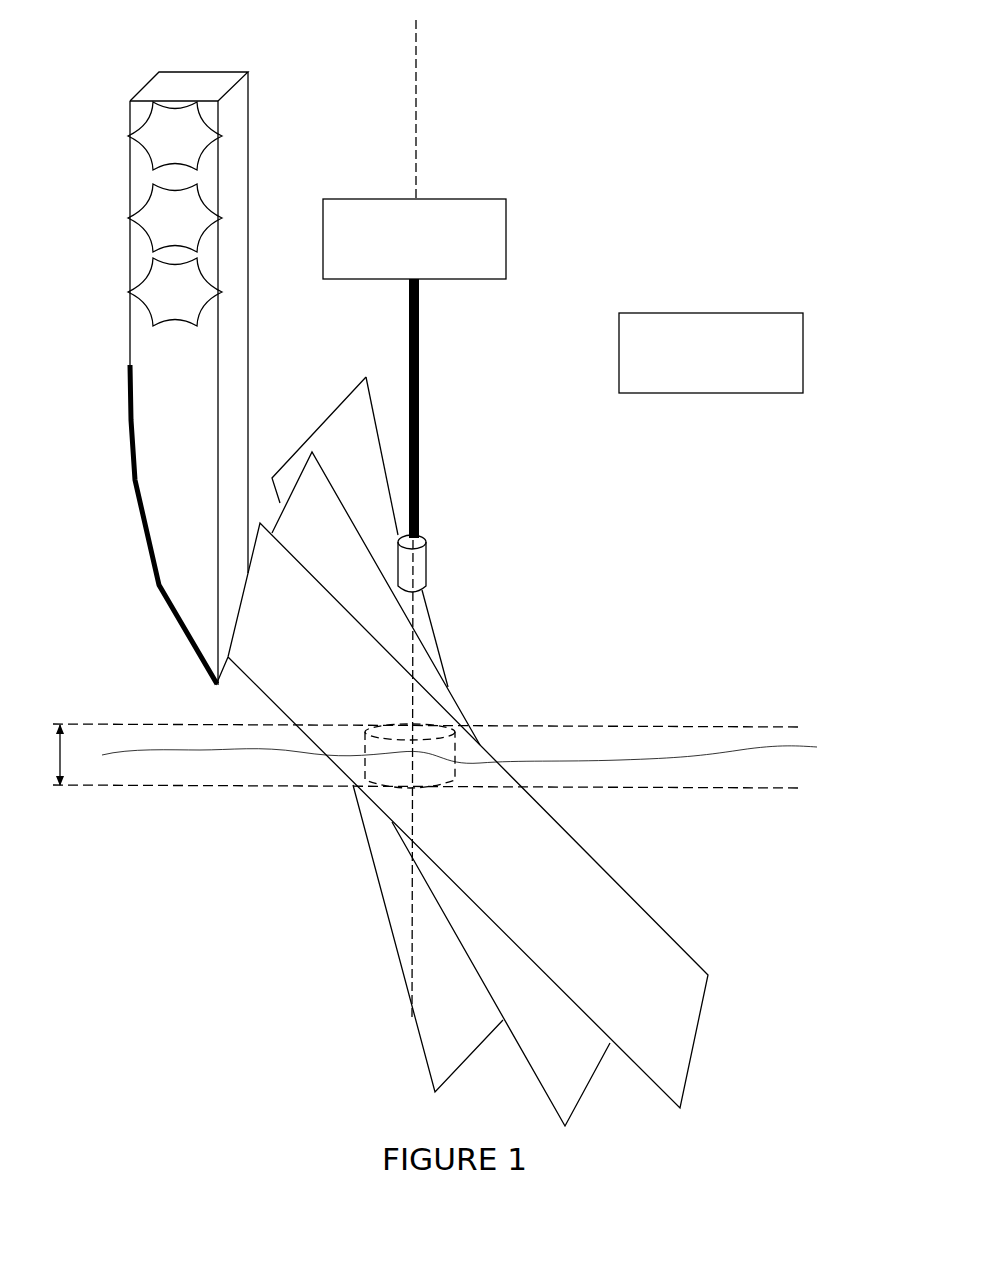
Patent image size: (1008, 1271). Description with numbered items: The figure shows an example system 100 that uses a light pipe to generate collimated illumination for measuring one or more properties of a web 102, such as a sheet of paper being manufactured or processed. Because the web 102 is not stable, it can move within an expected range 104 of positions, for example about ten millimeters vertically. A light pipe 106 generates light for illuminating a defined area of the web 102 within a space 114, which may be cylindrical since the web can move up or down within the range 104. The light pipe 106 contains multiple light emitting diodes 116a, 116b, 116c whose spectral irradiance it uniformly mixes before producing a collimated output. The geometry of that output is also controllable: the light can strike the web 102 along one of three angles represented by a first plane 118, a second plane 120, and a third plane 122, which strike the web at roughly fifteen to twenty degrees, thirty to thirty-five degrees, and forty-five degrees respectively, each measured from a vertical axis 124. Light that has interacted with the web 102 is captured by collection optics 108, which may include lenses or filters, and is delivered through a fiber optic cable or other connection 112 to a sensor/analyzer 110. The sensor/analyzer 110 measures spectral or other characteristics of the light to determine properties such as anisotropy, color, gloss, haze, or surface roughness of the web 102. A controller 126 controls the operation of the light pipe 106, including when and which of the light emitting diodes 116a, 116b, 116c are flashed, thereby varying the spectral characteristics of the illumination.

The system 100 is at (704, 48).
The web 102 is at (811, 740).
The range of positions 104 is at (423, 756).
The light pipe 106 is at (165, 66).
The collection optics 108 is at (427, 534).
The sensor/analyzer 110 is at (456, 196).
The connection 112 is at (422, 400).
The space 114 is at (458, 753).
The light emitting diode 116a is at (202, 139).
The light emitting diode 116b is at (194, 229).
The light emitting diode 116c is at (194, 308).
The first plane 118 is at (371, 431).
The second plane 120 is at (331, 514).
The third plane 122 is at (274, 666).
The vertical axis 124 is at (419, 124).
The controller 126 is at (753, 309).